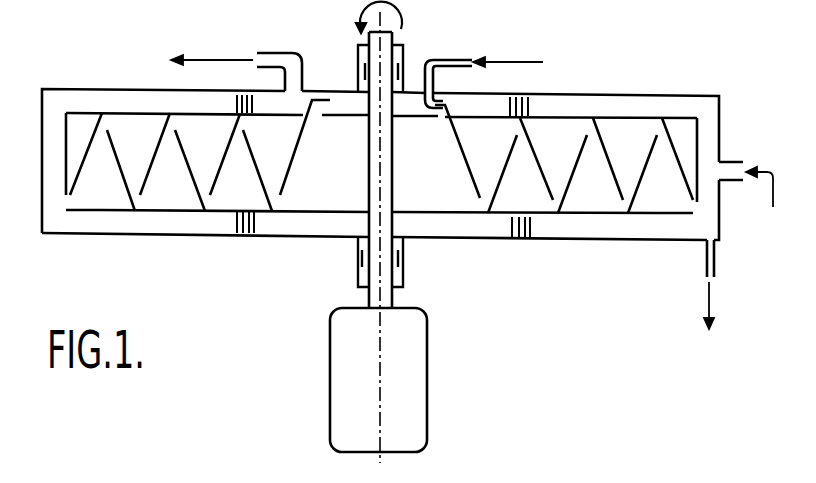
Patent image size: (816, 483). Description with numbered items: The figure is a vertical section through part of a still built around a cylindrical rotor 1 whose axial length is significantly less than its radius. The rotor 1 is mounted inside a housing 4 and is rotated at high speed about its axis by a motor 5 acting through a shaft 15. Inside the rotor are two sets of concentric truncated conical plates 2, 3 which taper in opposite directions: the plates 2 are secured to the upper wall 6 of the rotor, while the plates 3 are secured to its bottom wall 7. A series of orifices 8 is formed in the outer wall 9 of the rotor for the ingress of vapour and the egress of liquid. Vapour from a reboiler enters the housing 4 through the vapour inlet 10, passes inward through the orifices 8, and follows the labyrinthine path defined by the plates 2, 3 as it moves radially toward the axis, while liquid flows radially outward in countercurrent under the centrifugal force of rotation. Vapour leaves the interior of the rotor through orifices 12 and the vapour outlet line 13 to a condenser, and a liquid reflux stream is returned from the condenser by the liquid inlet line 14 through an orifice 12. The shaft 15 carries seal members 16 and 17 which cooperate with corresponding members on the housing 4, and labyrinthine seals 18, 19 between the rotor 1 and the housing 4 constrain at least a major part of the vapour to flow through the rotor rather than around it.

The rotor 1 is at (68, 141).
The plates 2 is at (470, 160).
The plates 3 is at (493, 193).
The housing 4 is at (170, 237).
The motor 5 is at (405, 380).
The upper wall 6 is at (604, 143).
The bottom wall 7 is at (662, 215).
The orifices 8 is at (68, 201).
The outer wall 9 is at (66, 151).
The vapour inlet 10 is at (734, 160).
The orifices 12 is at (317, 118).
The vapour outlet line 13 is at (273, 45).
The liquid inlet line 14 is at (458, 58).
The shaft 15 is at (392, 292).
The seal member 16 is at (404, 50).
The seal member 17 is at (360, 270).
The labyrinthine seal 18 is at (236, 98).
The labyrinthine seal 19 is at (258, 236).